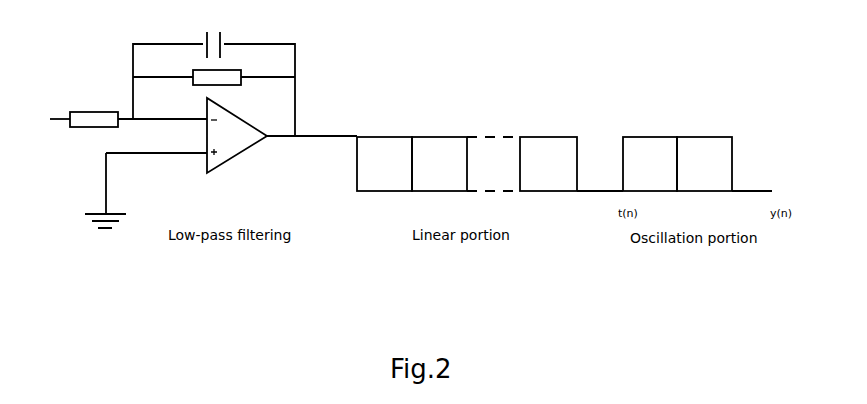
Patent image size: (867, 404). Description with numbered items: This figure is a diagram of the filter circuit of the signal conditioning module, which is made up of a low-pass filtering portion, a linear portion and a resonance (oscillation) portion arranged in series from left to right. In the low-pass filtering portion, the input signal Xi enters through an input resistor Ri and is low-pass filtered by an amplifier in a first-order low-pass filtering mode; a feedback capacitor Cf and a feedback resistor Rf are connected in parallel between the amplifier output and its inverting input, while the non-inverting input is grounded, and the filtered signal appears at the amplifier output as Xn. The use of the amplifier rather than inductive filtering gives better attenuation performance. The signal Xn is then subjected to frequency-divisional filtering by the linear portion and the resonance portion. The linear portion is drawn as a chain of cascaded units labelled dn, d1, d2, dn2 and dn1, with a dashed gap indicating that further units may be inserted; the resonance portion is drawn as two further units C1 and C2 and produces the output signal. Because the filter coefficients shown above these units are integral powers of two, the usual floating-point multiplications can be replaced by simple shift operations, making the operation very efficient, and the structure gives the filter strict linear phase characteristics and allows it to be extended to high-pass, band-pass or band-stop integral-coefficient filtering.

The input signal X(i) Xi is at (49, 119).
The input resistor R(i) Ri is at (138, 110).
The feedback capacitor Cf is at (213, 36).
The feedback resistor R(f) Rf is at (218, 87).
The filtered signal X(n) Xn is at (317, 118).
The linear portion delay unit dn is at (384, 154).
The linear portion delay unit d1 is at (439, 154).
The linear portion delay unit d2 is at (493, 154).
The linear portion delay unit dn-2 dn2 is at (548, 154).
The linear portion delay unit dn-1 dn1 is at (600, 183).
The oscillation portion coefficient unit C1 is at (650, 154).
The oscillation portion coefficient unit C2 is at (704, 154).